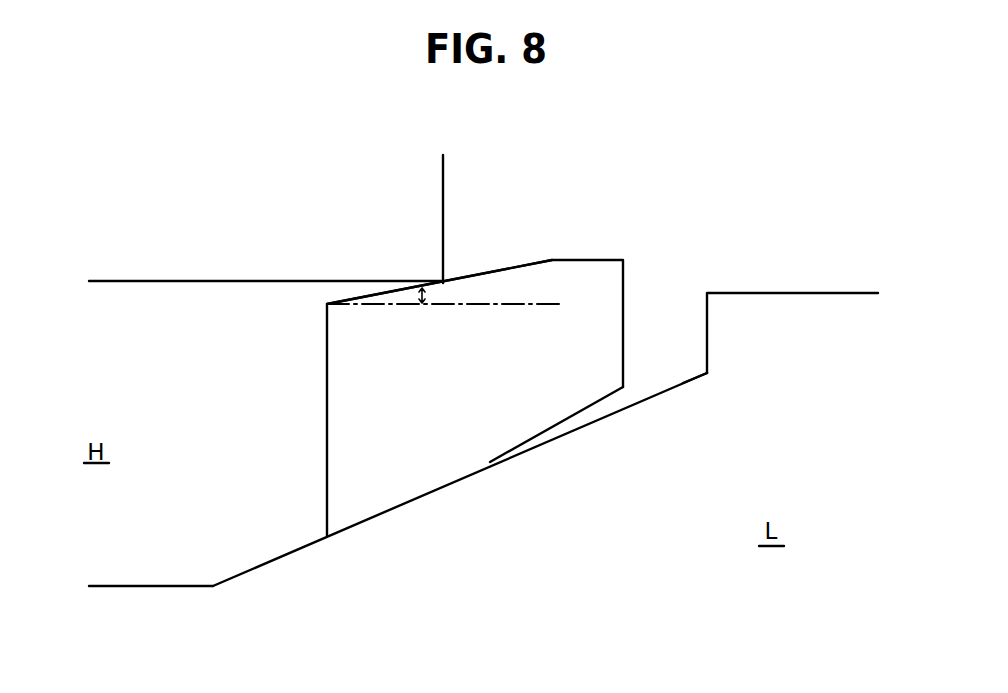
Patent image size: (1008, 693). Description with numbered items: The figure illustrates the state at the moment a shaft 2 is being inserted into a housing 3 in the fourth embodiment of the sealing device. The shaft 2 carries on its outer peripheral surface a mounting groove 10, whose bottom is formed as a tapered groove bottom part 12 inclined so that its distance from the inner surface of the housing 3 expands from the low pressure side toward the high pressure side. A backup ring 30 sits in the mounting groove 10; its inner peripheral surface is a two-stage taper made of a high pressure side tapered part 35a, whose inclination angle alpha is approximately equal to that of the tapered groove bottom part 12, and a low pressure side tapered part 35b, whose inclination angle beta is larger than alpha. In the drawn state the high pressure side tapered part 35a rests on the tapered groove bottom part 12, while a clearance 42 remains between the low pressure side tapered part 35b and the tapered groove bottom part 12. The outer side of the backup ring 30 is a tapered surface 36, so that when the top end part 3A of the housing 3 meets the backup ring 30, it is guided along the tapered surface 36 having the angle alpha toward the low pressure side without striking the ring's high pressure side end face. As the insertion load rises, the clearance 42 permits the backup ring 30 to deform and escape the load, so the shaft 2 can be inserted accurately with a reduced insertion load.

The shaft 2 is at (749, 330).
The housing 3 is at (357, 237).
The top end part 3A is at (428, 197).
The mounting groove 10 is at (148, 587).
The tapered groove bottom part 12 is at (662, 391).
The backup ring 30 is at (595, 292).
The high pressure side tapered part 35a is at (422, 497).
The low pressure side tapered part 35b is at (586, 411).
The tapered surface 36 is at (493, 267).
The clearance 42 is at (603, 409).